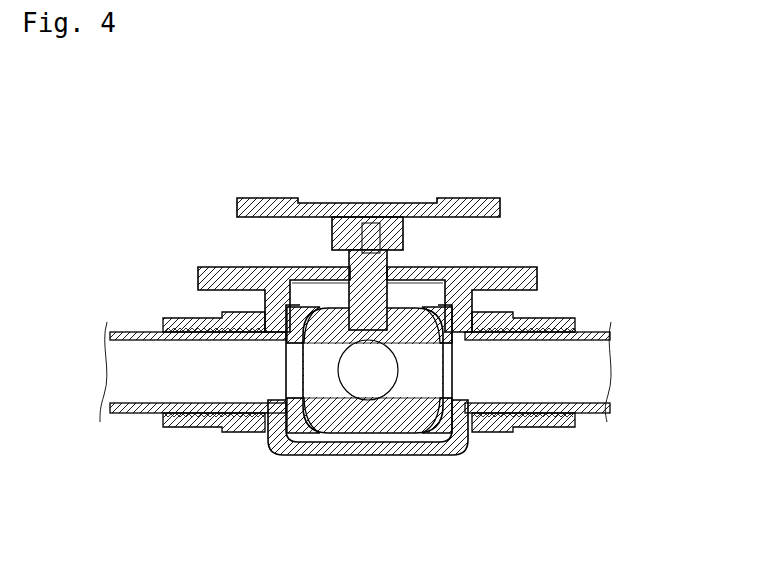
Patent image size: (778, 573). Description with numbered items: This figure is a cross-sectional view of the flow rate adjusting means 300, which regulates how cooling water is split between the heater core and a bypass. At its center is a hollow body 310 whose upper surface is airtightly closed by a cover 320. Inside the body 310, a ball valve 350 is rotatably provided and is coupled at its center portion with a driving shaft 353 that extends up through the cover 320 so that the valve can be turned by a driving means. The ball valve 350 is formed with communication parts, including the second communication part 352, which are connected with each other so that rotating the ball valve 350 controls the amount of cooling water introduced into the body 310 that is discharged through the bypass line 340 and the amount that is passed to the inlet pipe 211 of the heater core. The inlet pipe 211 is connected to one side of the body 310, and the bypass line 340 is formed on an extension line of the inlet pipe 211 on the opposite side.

The flow rate adjusting means 300 is at (513, 130).
The body 310 is at (281, 452).
The cover 320 is at (521, 267).
The bypass line 340 is at (145, 357).
The ball valve 350 is at (317, 380).
The second communication part 352 is at (368, 380).
The driving shaft 353 is at (349, 278).
The inlet pipe 211 is at (590, 373).